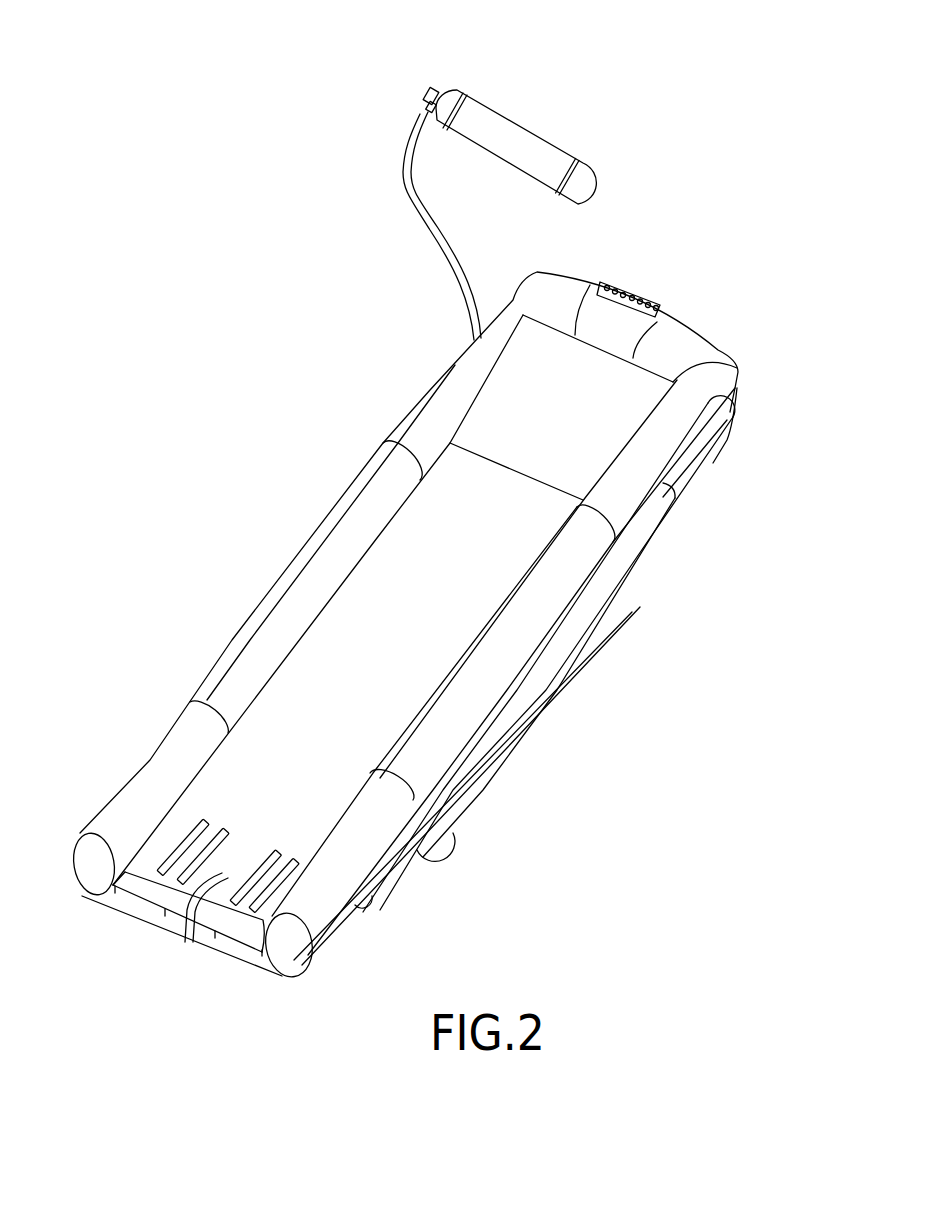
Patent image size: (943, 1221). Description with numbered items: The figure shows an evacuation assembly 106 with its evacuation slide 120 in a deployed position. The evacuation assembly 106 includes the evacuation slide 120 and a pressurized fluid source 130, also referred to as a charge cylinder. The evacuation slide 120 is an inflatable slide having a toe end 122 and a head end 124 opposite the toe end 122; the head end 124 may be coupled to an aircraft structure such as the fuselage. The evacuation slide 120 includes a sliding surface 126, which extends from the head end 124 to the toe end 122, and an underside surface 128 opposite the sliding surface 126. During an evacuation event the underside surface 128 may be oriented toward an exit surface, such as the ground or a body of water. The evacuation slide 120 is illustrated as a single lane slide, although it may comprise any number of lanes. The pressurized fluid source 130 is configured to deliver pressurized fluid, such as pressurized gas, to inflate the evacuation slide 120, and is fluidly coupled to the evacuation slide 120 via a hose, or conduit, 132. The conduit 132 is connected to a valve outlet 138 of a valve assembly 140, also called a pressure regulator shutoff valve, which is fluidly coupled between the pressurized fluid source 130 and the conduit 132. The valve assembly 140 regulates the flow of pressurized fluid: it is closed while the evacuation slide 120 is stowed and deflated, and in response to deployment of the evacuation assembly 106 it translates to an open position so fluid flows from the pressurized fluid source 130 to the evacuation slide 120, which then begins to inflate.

The evacuation assembly 106 is at (229, 198).
The evacuation slide 120 is at (712, 310).
The toe end 122 is at (137, 915).
The head end 124 is at (588, 284).
The sliding surface 126 is at (433, 620).
The underside surface 128 is at (558, 682).
The pressurized fluid source 130 is at (530, 143).
The conduit 132 is at (433, 242).
The valve outlet 138 is at (420, 113).
The valve assembly 140 is at (443, 84).